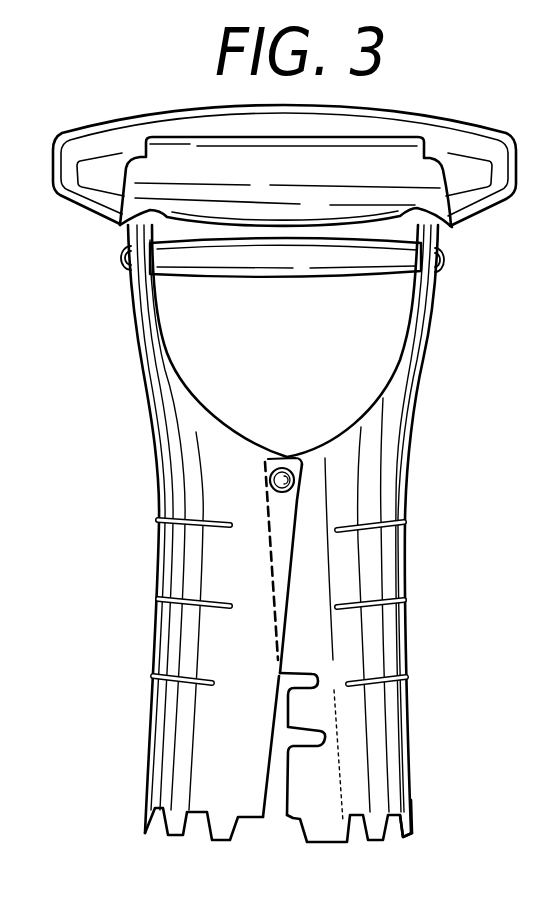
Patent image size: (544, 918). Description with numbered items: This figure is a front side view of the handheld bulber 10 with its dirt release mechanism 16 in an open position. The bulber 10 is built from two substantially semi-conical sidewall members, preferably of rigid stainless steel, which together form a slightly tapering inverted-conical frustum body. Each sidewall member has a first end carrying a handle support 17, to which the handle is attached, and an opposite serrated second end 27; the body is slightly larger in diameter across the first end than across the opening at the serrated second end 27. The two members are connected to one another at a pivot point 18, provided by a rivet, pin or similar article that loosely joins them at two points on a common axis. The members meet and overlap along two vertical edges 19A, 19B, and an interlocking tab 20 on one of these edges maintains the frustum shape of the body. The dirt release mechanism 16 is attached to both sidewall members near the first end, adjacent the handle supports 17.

The handheld bulber 10 is at (284, 500).
The dirt release mechanism 16 is at (300, 278).
The handle support 17 is at (139, 336).
The pivot point 18 is at (284, 478).
The vertical edge 19A is at (302, 822).
The vertical edge 19B is at (248, 820).
The interlocking tab 20 is at (295, 713).
The serrated second end 27 is at (412, 829).